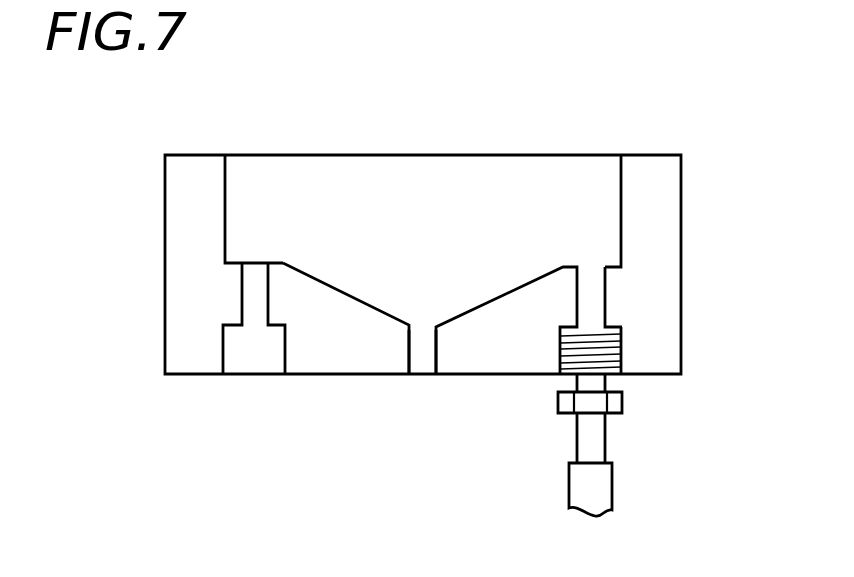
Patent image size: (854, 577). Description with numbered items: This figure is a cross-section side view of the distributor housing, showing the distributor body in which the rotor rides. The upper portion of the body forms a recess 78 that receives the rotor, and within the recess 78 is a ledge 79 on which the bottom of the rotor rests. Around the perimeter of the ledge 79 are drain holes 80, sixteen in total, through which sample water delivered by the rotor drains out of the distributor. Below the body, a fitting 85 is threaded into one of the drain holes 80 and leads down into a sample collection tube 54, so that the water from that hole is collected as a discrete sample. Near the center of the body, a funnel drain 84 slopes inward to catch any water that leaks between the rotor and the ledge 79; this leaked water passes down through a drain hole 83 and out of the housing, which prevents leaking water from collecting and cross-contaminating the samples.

The sample collection tube 54 is at (615, 488).
The recess 78 is at (620, 205).
The ledge 79 is at (275, 263).
The drain holes 80 is at (592, 302).
The drain hole 83 is at (410, 350).
The funnel drain 84 is at (366, 300).
The fitting 85 is at (575, 439).